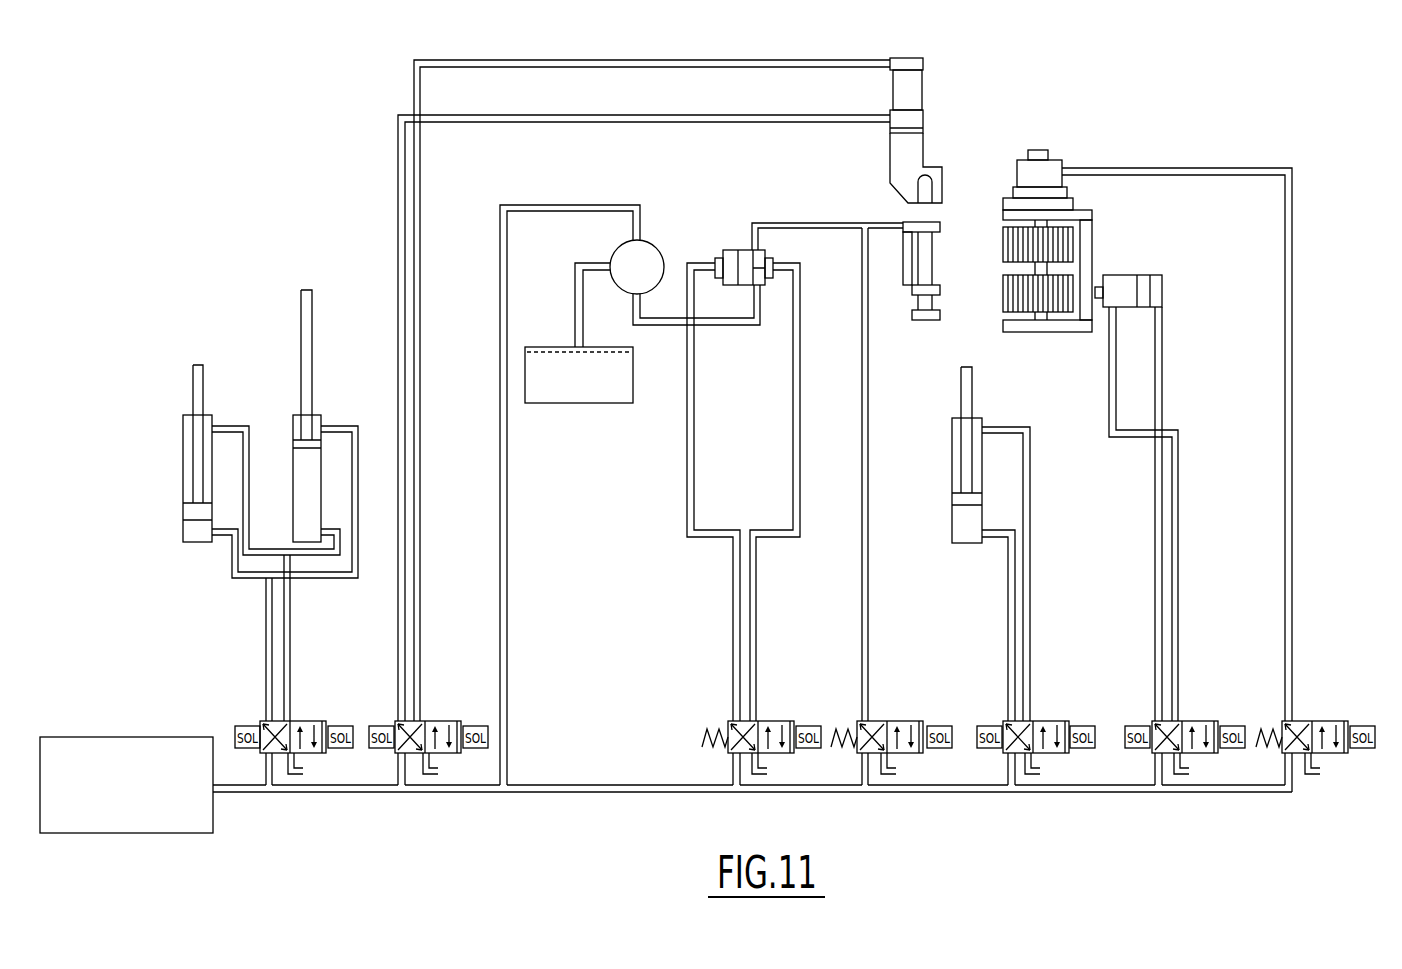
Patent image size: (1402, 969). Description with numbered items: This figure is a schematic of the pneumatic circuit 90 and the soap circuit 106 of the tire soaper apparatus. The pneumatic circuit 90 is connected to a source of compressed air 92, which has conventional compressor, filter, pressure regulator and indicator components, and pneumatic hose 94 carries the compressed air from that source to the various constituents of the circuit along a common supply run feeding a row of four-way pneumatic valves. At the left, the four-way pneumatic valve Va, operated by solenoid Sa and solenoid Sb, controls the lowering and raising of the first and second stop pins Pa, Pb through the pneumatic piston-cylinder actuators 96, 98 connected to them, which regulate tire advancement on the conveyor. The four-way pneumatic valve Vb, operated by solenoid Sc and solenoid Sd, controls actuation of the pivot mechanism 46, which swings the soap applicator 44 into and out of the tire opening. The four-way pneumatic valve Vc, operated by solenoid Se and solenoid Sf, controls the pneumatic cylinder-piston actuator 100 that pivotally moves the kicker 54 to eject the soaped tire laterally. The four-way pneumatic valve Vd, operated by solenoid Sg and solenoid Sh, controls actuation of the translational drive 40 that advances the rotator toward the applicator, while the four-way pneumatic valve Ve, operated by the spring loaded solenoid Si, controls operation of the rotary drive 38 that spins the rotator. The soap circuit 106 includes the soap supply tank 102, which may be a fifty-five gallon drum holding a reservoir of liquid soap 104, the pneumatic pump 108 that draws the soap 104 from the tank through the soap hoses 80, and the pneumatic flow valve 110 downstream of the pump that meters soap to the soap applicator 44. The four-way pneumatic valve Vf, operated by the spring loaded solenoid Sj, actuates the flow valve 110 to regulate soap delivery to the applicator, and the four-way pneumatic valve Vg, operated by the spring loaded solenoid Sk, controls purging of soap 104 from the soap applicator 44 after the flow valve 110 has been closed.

The rotary drive 38 is at (1068, 160).
The translational drive 40 is at (1136, 274).
The soap applicator 44 is at (912, 292).
The pivot mechanism 46 is at (933, 162).
The kicker 54 is at (973, 388).
The soap hoses 80 is at (824, 222).
The pneumatic circuit 90 is at (88, 736).
The source of compressed air 92 is at (1294, 516).
The pneumatic hose 94 is at (284, 620).
The pneumatic piston-cylinder actuator 96 is at (306, 416).
The pneumatic piston-cylinder actuator 98 is at (185, 435).
The pneumatic cylinder-piston actuator 100 is at (955, 455).
The soap supply tank 102 is at (600, 405).
The liquid soap 104 is at (537, 345).
The soap circuit 106 is at (767, 222).
The pneumatic pump 108 is at (645, 238).
The pneumatic flow valve 110 is at (745, 248).
The first stop pin Pa is at (313, 325).
The second stop pin Pb is at (205, 376).
The four-way pneumatic valve Va is at (304, 720).
The four-way pneumatic valve Vb is at (434, 720).
The four-way pneumatic valve Vc is at (1040, 720).
The four-way pneumatic valve Vd is at (1190, 720).
The four-way pneumatic valve Ve is at (1320, 720).
The four-way pneumatic valve Vf is at (763, 720).
The four-way pneumatic valve Vg is at (878, 720).
The solenoid Sa is at (337, 725).
The solenoid Sb is at (243, 724).
The solenoid Sc is at (471, 725).
The solenoid Sd is at (383, 722).
The solenoid Se is at (1080, 725).
The solenoid Sf is at (990, 725).
The solenoid Sg is at (1233, 725).
The solenoid Sh is at (1135, 725).
The spring loaded solenoid Si is at (1365, 725).
The spring loaded solenoid Sj is at (806, 725).
The spring loaded solenoid Sk is at (934, 725).